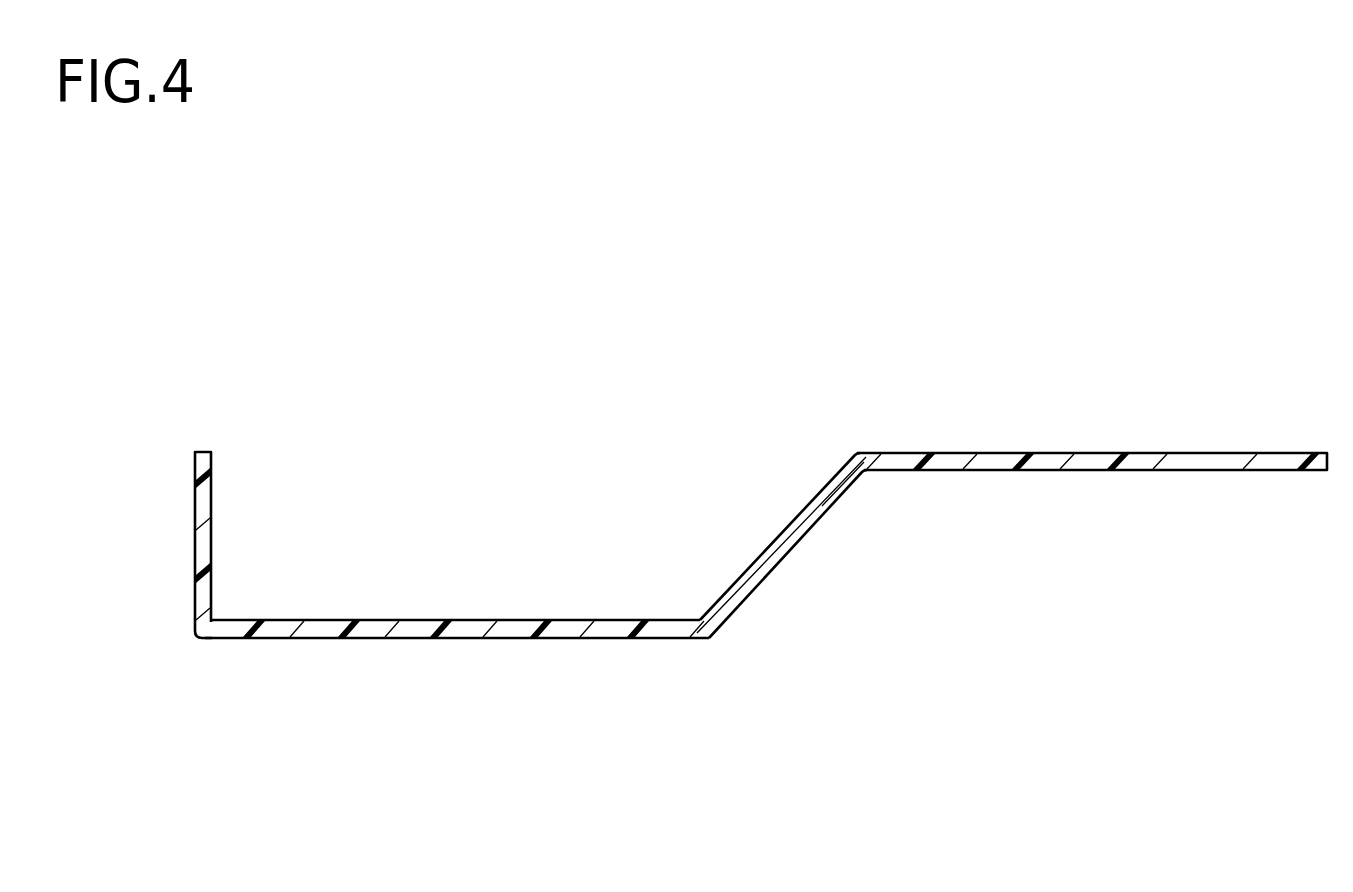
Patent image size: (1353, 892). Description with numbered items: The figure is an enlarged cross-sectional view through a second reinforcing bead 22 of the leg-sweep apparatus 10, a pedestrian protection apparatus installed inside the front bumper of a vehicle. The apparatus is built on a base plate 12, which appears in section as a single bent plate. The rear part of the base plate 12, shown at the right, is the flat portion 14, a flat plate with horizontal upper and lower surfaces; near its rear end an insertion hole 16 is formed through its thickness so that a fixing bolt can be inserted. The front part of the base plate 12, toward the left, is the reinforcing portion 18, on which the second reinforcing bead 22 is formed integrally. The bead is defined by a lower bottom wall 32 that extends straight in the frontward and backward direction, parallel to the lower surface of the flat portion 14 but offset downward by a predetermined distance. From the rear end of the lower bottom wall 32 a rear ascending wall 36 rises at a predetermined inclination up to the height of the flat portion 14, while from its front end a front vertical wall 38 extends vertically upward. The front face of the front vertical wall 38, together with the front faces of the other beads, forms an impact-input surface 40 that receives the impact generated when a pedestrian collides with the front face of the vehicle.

The leg-sweep apparatus 10 is at (721, 516).
The base plate 12 is at (1010, 504).
The flat portion 14 is at (1092, 481).
The insertion hole 16 is at (1226, 461).
The reinforcing portion 18 is at (811, 536).
The second reinforcing bead 22 is at (457, 688).
The lower bottom wall 32 is at (367, 628).
The rear ascending wall 36 is at (762, 563).
The front vertical wall 38 is at (200, 552).
The impact-input surface 40 is at (163, 546).